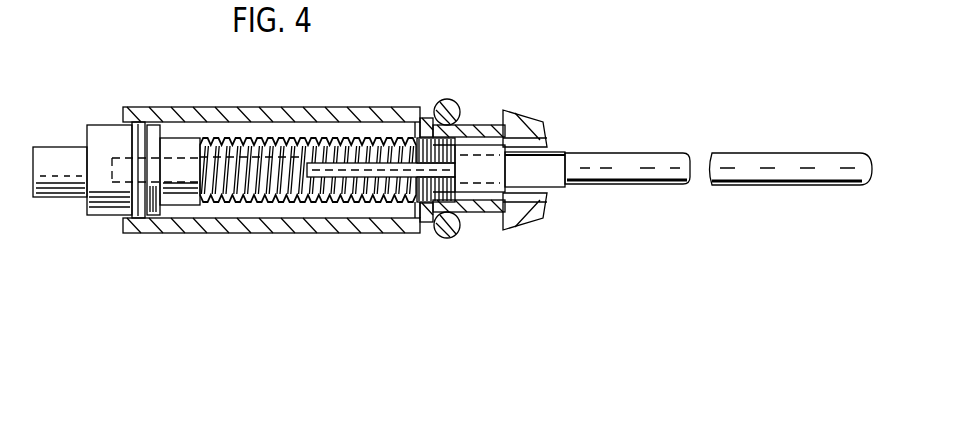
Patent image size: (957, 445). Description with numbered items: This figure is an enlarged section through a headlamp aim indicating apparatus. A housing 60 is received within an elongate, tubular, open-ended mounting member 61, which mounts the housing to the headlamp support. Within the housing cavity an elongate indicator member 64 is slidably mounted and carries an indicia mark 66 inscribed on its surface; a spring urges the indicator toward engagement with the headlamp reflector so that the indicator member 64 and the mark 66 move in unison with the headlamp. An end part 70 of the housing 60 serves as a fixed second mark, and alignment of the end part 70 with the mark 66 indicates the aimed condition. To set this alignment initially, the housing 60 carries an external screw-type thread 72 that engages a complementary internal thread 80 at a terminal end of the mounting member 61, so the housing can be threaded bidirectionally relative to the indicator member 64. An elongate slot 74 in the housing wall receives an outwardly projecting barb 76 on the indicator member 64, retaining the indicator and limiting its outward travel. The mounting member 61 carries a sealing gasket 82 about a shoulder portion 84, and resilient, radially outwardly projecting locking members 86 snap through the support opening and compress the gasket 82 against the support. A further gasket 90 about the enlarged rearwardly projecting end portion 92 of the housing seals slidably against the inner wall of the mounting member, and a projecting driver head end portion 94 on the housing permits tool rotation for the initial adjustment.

The housing 60 is at (232, 140).
The mounting member 61 is at (279, 107).
The elongate indicator member 64 is at (665, 160).
The indicia mark 66 is at (570, 155).
The end part of the housing 70 is at (500, 125).
The external screw-type thread 72 is at (345, 205).
The elongate slot 74 is at (330, 162).
The outwardly projecting barb 76 is at (410, 210).
The internal thread 80 is at (552, 195).
The sealing member or gasket 82 is at (452, 100).
The shoulder portion 84 is at (430, 108).
The locking members 86 is at (528, 110).
The gasket 90 is at (136, 114).
The enlarged rearwardly projecting end portion 92 is at (107, 212).
The driver head end portion 94 is at (50, 150).